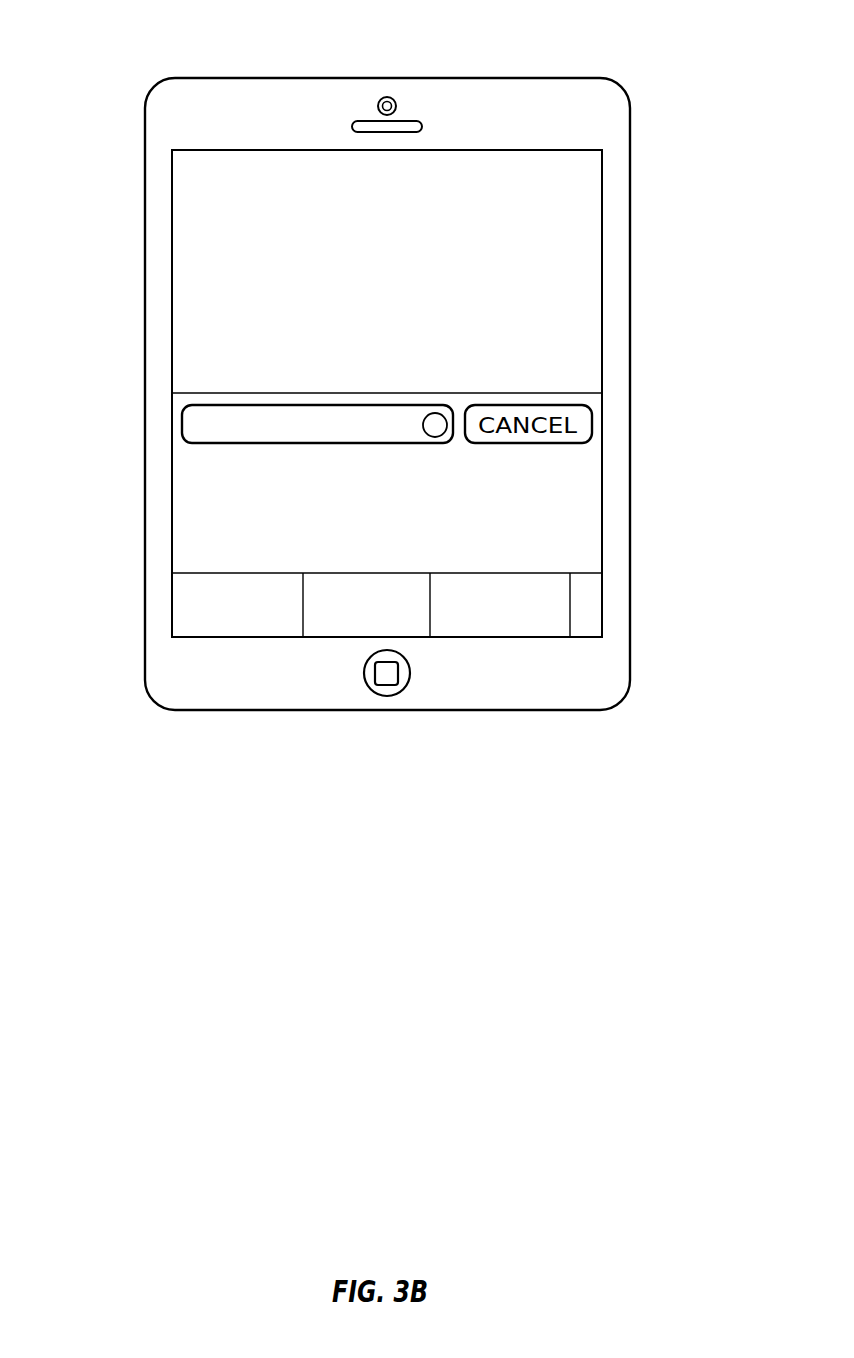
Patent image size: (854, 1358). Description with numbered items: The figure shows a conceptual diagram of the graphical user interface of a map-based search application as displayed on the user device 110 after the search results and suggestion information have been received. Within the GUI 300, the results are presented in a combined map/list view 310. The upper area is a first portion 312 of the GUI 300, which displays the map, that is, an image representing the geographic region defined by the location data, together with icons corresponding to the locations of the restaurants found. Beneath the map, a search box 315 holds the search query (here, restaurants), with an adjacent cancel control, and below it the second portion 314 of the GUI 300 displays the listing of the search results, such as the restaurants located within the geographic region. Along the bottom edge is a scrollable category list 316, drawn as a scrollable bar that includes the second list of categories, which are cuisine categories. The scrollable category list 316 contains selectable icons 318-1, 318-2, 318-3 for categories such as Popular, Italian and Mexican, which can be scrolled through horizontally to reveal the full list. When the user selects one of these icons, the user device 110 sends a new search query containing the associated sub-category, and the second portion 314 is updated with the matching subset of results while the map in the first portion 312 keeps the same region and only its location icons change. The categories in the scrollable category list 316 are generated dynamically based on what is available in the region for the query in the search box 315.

The user device 110 is at (403, 77).
The GUI 300 is at (465, 148).
The combined map/list view 310 is at (575, 227).
The first portion 312 is at (483, 184).
The second portion 314 is at (452, 521).
The search box 315 is at (182, 437).
The scrollable category list 316 is at (172, 607).
The selectable icon 318-1 is at (262, 629).
The selectable icon 318-2 is at (395, 629).
The selectable icon 318-3 is at (527, 629).